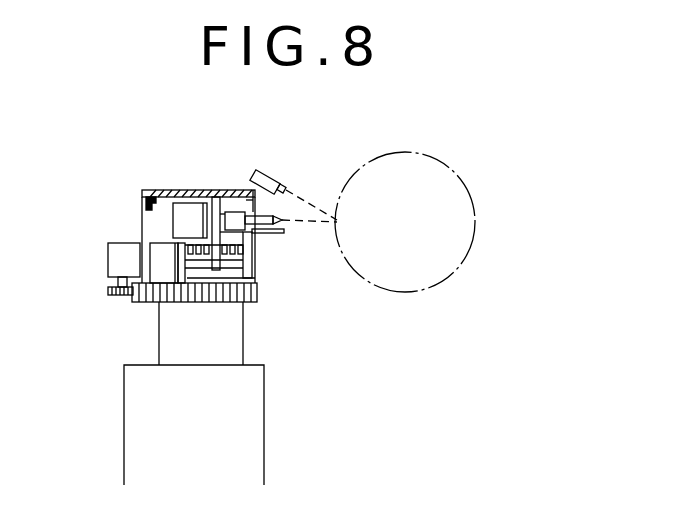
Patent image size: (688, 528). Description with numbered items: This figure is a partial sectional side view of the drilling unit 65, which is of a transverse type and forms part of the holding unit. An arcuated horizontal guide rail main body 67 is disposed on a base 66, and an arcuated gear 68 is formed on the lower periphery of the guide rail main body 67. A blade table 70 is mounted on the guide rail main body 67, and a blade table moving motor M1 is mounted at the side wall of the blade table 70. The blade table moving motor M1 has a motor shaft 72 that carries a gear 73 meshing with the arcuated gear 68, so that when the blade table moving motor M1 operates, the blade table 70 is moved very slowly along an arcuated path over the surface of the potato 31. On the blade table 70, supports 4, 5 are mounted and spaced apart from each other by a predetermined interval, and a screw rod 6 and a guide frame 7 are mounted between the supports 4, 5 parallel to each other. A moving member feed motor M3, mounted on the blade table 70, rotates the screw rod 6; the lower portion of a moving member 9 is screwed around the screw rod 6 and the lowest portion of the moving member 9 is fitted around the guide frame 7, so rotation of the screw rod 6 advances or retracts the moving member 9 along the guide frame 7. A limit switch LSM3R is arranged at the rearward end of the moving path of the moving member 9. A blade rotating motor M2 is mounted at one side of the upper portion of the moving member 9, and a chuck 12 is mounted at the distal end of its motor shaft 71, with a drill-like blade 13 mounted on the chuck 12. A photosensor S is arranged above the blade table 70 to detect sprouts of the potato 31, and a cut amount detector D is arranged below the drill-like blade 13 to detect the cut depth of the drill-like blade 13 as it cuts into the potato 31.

The drilling unit 65 is at (110, 140).
The motor shaft 71 is at (223, 189).
The limit switch LSM3R is at (143, 198).
The blade rotating motor M2 is at (185, 203).
The moving member feed motor M3 is at (155, 243).
The blade table moving motor M1 is at (108, 258).
The motor shaft 72 is at (118, 285).
The gear 73 is at (108, 292).
The blade table 70 is at (258, 284).
The arcuated gear 68 is at (145, 304).
The guide rail main body 67 is at (255, 305).
The support 4 is at (172, 302).
The guide frame 7 is at (200, 302).
The screw rod 6 is at (228, 302).
The moving member 9 is at (215, 197).
The chuck 12 is at (233, 212).
The cut amount detector D is at (283, 230).
The drill-like blade 13 is at (258, 232).
The support 5 is at (257, 265).
The photosensor S is at (272, 170).
The base 66 is at (265, 405).
The potato 31 is at (458, 164).